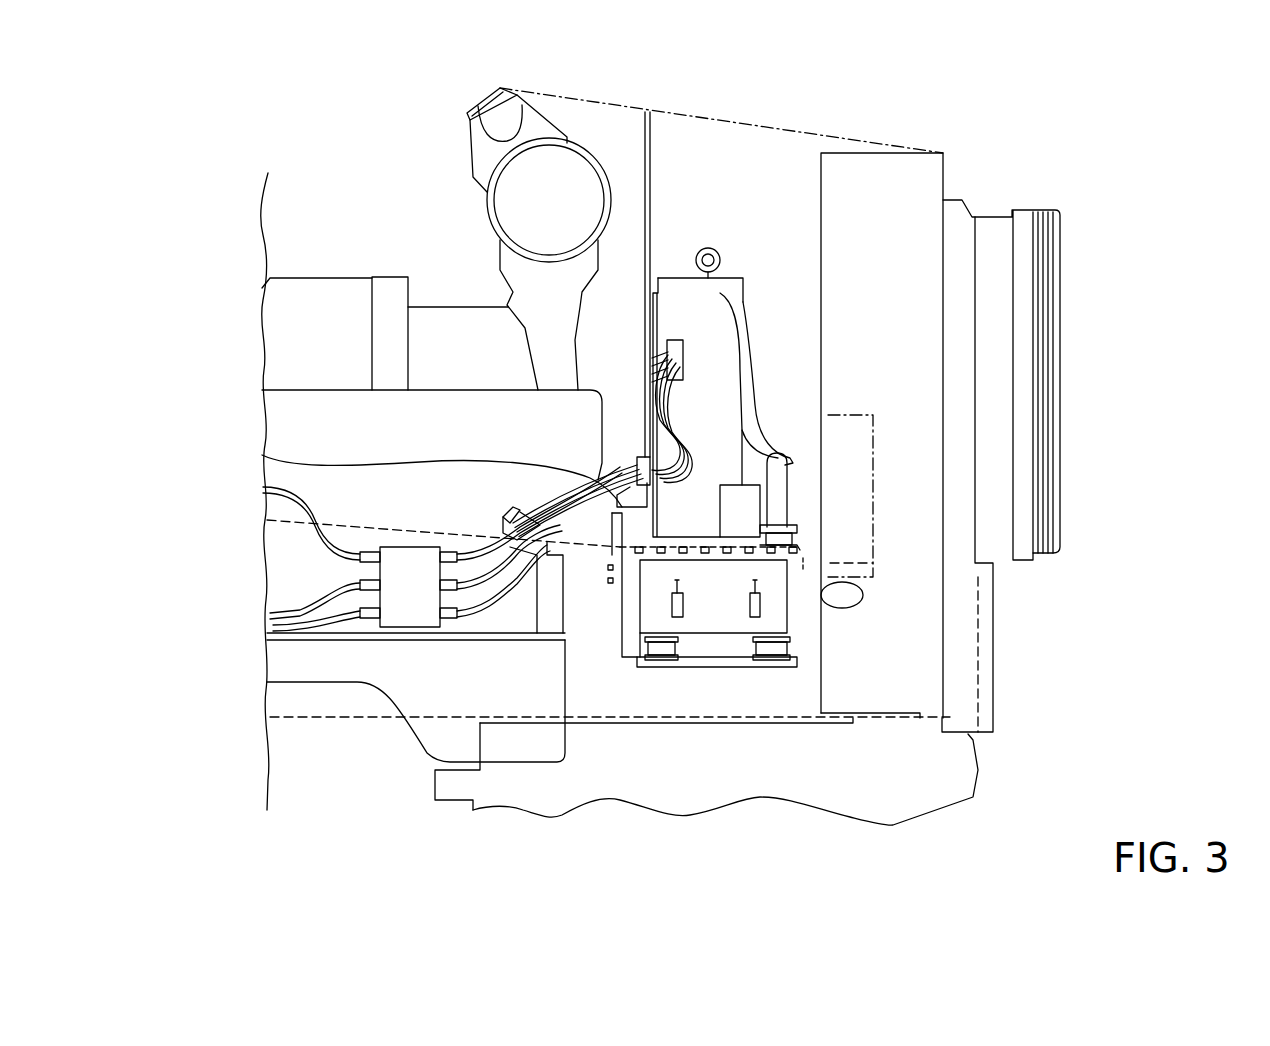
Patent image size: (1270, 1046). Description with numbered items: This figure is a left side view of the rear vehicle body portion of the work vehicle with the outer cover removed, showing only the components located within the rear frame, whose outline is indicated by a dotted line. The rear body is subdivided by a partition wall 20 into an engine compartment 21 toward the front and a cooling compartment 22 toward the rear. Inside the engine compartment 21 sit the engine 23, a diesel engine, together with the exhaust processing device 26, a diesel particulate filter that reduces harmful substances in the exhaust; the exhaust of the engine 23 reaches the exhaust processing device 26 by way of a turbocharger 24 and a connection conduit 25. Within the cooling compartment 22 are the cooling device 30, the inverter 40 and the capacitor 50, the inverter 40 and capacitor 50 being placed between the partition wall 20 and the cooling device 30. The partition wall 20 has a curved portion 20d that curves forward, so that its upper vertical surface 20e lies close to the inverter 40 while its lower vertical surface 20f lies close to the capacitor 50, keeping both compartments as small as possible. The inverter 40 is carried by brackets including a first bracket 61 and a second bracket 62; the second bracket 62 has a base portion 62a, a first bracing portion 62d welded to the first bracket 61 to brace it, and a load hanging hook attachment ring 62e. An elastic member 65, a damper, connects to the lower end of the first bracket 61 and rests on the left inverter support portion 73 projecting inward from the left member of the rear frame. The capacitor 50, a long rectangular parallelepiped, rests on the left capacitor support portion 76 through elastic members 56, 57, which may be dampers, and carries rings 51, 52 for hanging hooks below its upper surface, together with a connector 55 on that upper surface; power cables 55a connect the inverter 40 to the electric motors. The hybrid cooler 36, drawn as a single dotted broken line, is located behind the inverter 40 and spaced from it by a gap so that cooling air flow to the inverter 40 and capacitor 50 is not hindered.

The partition wall 20 is at (653, 147).
The curved portion 20d is at (267, 457).
The upper vertical surface 20e is at (643, 155).
The lower vertical surface 20f is at (625, 628).
The engine compartment 21 is at (453, 243).
The cooling compartment 22 is at (797, 190).
The engine 23 is at (290, 420).
The turbocharger 24 is at (387, 290).
The connection conduit 25 is at (527, 330).
The exhaust processing device 26 is at (512, 208).
The cooling device 30 is at (923, 182).
The hybrid cooler 36 is at (873, 448).
The inverter 40 is at (687, 307).
The capacitor 50 is at (777, 610).
The ring 51 is at (683, 583).
The ring 52 is at (747, 587).
The connector 55 is at (783, 535).
The power cables 55a is at (483, 607).
The elastic member 56 is at (663, 650).
The elastic member 57 is at (773, 647).
The first bracket 61 is at (752, 510).
The second bracket 62 is at (753, 327).
The base portion 62a is at (748, 350).
The first bracing portion 62d is at (765, 450).
The load hanging hook attachment ring 62e is at (710, 257).
The elastic member 65 is at (808, 527).
The left inverter support portion 73 is at (657, 563).
The left capacitor support portion 76 is at (652, 663).